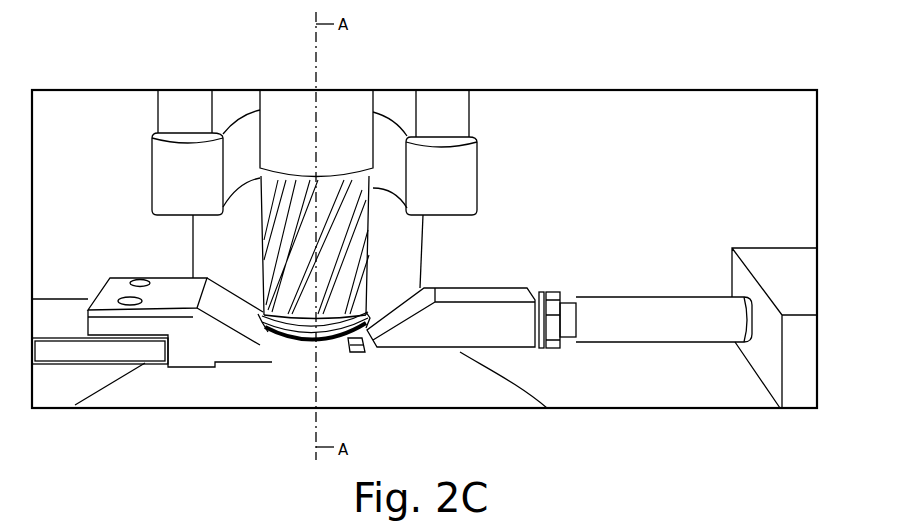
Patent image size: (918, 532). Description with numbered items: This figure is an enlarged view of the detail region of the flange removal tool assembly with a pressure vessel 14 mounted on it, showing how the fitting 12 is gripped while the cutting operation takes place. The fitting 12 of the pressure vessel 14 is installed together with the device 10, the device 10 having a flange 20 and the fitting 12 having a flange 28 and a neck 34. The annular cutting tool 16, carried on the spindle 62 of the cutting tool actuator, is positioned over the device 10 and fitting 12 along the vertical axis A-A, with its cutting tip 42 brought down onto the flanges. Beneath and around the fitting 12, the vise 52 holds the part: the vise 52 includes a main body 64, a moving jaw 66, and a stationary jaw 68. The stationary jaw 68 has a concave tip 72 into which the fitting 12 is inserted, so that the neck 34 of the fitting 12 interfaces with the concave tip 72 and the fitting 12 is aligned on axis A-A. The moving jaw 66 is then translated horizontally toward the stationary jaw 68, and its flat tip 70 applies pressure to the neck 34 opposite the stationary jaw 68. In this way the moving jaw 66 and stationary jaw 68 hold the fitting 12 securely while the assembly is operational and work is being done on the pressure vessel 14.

The device 10 is at (265, 320).
The fitting 12 is at (356, 348).
The pressure vessel 14 is at (503, 397).
The annular cutting tool 16 is at (332, 240).
The flange 20 is at (308, 335).
The flange 28 is at (323, 346).
The neck 34 is at (348, 357).
The cutting tip 42 is at (268, 328).
The vise 52 is at (662, 310).
The spindle 62 is at (348, 143).
The main body 64 is at (797, 387).
The moving jaw 66 is at (488, 330).
The stationary jaw 68 is at (193, 343).
The flat tip 70 is at (358, 345).
The concave tip 72 is at (290, 335).